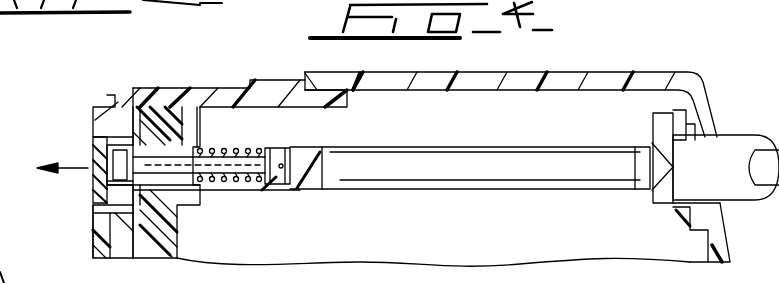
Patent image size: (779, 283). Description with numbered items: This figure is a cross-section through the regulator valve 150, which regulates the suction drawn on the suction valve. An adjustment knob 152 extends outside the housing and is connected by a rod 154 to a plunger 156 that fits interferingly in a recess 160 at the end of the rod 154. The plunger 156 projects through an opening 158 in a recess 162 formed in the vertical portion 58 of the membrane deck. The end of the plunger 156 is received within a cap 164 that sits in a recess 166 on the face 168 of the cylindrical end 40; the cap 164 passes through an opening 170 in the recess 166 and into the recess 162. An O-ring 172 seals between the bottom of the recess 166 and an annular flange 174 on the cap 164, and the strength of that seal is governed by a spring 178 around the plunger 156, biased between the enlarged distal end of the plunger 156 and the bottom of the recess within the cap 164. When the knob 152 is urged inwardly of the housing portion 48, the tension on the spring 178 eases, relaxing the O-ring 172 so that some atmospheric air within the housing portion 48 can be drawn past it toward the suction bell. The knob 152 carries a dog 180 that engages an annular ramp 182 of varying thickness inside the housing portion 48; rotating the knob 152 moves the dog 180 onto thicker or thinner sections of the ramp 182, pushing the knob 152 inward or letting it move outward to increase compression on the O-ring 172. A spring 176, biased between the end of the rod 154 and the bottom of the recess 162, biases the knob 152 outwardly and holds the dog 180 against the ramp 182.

The cylindrical end 40 is at (290, 82).
The housing portion 48 is at (657, 72).
The vertical portion 58 is at (177, 245).
The regulator valve 150 is at (218, 143).
The adjustment knob 152 is at (742, 135).
The rod 154 is at (393, 190).
The plunger 156 is at (257, 192).
The opening 158 is at (198, 183).
The recess 160 is at (290, 160).
The recess 162 is at (190, 132).
The cap 164 is at (93, 190).
The recess 166 is at (95, 137).
The face 168 is at (93, 238).
The opening 170 is at (120, 140).
The O-ring 172 is at (107, 211).
The annular flange 174 is at (93, 141).
The spring 176 is at (233, 150).
The spring 178 is at (150, 150).
The dog 180 is at (652, 118).
The annular ramp 182 is at (680, 108).